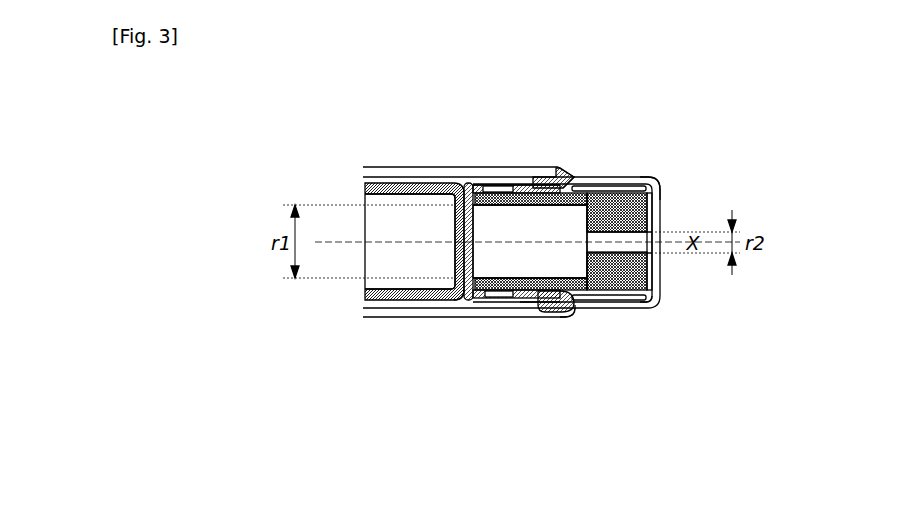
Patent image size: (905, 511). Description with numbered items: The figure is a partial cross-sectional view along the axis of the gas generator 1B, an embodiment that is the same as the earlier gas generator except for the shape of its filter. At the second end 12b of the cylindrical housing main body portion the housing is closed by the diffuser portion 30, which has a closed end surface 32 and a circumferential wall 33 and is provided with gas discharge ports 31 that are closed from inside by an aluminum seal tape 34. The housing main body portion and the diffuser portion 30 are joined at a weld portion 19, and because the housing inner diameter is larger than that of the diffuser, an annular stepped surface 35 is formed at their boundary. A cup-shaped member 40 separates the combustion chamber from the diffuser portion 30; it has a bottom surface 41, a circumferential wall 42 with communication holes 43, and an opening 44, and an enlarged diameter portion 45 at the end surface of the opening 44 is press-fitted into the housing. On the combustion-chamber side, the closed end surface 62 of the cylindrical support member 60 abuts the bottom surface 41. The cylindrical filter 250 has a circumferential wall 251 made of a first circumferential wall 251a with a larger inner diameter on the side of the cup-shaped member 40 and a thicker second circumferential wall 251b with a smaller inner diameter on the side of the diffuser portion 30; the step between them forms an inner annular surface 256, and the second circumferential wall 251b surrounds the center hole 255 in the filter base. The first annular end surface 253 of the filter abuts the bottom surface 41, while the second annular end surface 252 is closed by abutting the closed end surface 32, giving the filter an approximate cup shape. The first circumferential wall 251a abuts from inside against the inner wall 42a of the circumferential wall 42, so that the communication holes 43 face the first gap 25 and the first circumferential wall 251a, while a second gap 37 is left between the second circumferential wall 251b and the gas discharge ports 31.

The gas generator 1B is at (419, 140).
The cylindrical support member 60 is at (383, 179).
The closed end surface 62 is at (457, 254).
The diffuser portion 30 is at (661, 180).
The gas discharge ports 31 is at (613, 186).
The closed end surface 32 is at (656, 209).
The circumferential wall 33 is at (637, 302).
The aluminum seal tape 34 is at (530, 241).
The annular stepped surface 35 is at (550, 310).
The second gap 37 is at (644, 183).
The cup-shaped member 40 is at (468, 181).
The bottom surface 41 is at (531, 210).
The circumferential wall 42 is at (520, 302).
The inner wall 42a is at (528, 282).
The communication holes 43 is at (505, 185).
The opening 44 is at (548, 287).
The enlarged diameter portion 45 is at (542, 183).
The weld portion 19 is at (556, 192).
The first gap 25 is at (479, 186).
The cylindrical filter 250 is at (567, 178).
The circumferential wall 251 is at (600, 418).
The first circumferential wall 251a is at (530, 301).
The second circumferential wall 251b is at (652, 307).
The second annular end surface 252 is at (655, 283).
The first annular end surface 253 is at (463, 301).
The center hole 255 is at (640, 248).
The inner annular surface 256 is at (585, 209).
The second end 12b is at (572, 313).